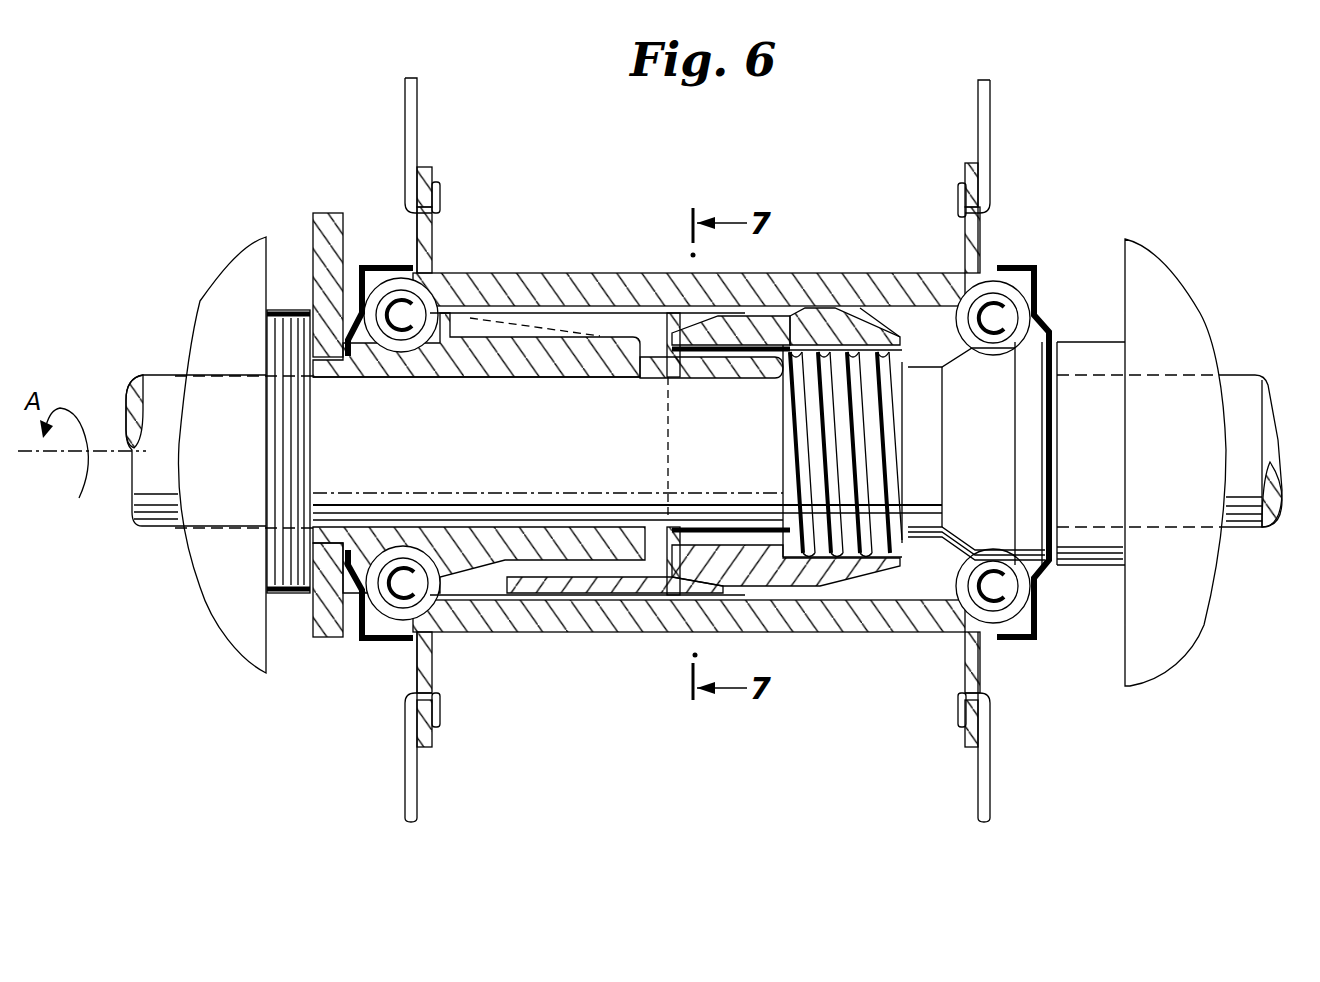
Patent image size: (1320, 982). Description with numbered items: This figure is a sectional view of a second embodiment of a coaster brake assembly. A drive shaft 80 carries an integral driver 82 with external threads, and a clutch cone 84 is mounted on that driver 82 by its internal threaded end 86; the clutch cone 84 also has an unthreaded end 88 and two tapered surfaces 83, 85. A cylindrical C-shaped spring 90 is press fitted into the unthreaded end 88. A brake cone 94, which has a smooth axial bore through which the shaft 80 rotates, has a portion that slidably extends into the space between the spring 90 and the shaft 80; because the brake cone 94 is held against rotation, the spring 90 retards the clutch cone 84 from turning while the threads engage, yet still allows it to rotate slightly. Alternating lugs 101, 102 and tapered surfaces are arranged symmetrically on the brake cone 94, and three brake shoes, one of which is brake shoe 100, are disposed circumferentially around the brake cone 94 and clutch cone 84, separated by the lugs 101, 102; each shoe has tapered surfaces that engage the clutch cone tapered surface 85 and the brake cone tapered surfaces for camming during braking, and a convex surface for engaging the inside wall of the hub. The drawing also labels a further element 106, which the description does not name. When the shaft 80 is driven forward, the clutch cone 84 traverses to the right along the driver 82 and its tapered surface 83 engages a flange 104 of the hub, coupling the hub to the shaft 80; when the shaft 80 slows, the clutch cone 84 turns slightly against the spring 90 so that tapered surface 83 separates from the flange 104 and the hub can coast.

The drive shaft 80 is at (1248, 388).
The driver 82 is at (867, 468).
The tapered surface 83 is at (840, 312).
The clutch cone 84 is at (783, 335).
The tapered surface 85 is at (700, 332).
The internal threaded end 86 is at (897, 336).
The unthreaded end 88 is at (668, 310).
The cylindrical C-shaped spring 90 is at (775, 357).
The brake cone 94 is at (472, 332).
The brake shoe 100 is at (630, 585).
The lug 101 is at (583, 313).
The lug 102 is at (477, 585).
The flange 104 is at (888, 313).
The housing 106 is at (515, 283).